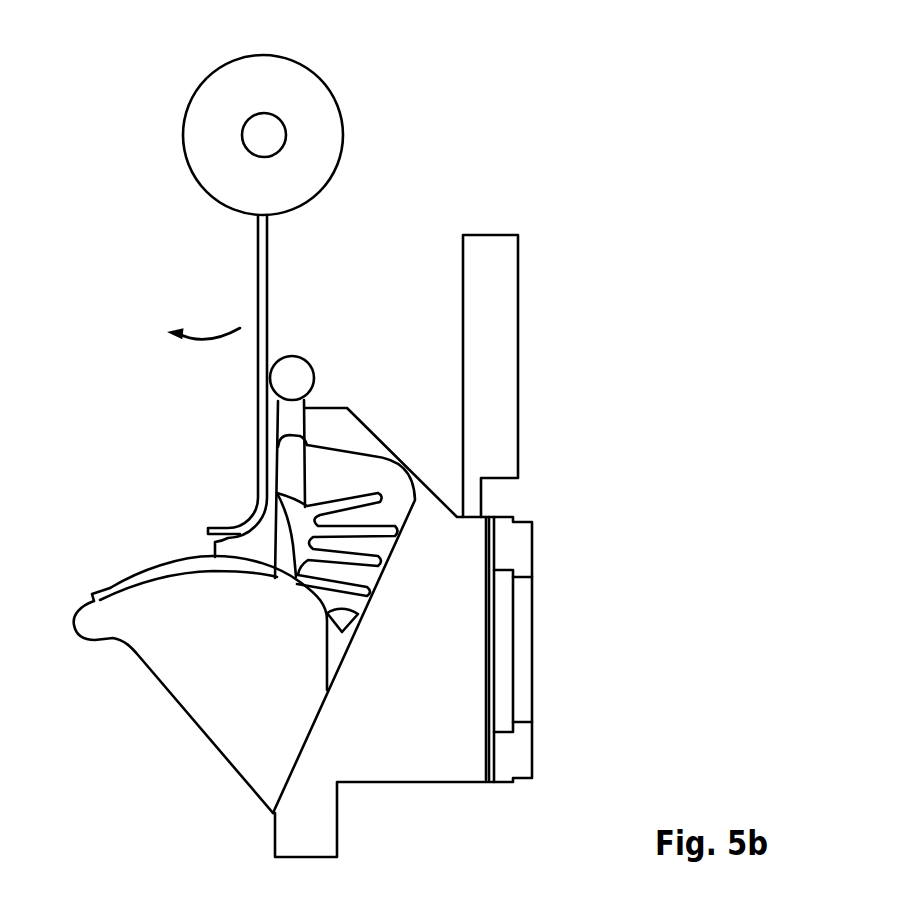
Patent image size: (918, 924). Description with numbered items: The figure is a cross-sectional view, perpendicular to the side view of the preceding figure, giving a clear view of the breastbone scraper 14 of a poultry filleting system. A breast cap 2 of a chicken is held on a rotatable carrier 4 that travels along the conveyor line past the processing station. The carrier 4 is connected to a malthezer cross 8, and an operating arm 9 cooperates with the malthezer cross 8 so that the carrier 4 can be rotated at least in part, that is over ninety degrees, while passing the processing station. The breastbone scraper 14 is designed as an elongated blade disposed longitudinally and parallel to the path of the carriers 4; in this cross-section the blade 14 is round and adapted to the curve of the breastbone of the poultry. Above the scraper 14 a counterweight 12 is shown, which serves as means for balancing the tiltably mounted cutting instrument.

The breast cap 2 is at (225, 705).
The carrier 4 is at (379, 794).
The malthezer cross 8 is at (542, 664).
The operating arm 9 is at (528, 329).
The counterweight 12 is at (339, 80).
The breastbone scraper 14 is at (233, 510).